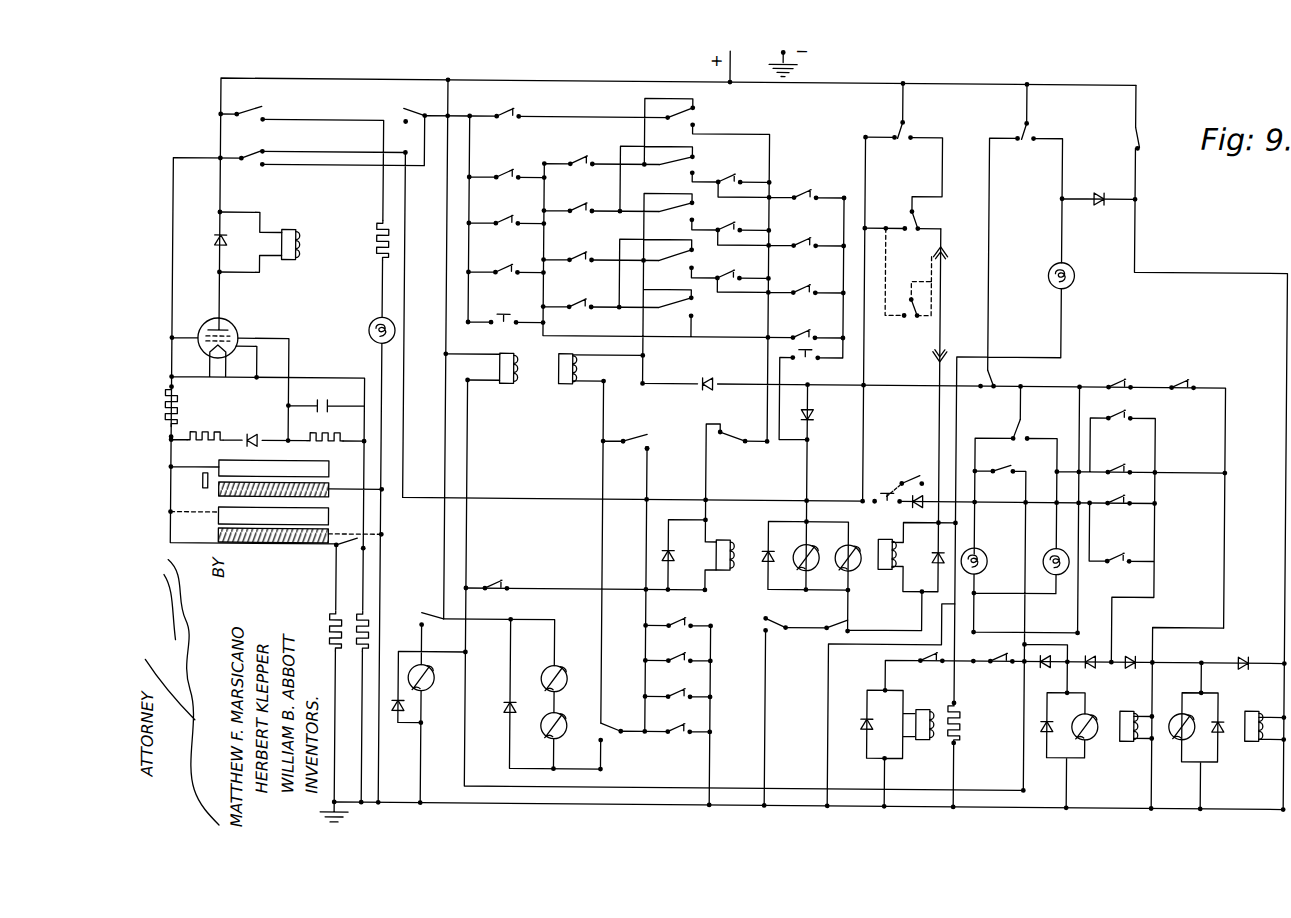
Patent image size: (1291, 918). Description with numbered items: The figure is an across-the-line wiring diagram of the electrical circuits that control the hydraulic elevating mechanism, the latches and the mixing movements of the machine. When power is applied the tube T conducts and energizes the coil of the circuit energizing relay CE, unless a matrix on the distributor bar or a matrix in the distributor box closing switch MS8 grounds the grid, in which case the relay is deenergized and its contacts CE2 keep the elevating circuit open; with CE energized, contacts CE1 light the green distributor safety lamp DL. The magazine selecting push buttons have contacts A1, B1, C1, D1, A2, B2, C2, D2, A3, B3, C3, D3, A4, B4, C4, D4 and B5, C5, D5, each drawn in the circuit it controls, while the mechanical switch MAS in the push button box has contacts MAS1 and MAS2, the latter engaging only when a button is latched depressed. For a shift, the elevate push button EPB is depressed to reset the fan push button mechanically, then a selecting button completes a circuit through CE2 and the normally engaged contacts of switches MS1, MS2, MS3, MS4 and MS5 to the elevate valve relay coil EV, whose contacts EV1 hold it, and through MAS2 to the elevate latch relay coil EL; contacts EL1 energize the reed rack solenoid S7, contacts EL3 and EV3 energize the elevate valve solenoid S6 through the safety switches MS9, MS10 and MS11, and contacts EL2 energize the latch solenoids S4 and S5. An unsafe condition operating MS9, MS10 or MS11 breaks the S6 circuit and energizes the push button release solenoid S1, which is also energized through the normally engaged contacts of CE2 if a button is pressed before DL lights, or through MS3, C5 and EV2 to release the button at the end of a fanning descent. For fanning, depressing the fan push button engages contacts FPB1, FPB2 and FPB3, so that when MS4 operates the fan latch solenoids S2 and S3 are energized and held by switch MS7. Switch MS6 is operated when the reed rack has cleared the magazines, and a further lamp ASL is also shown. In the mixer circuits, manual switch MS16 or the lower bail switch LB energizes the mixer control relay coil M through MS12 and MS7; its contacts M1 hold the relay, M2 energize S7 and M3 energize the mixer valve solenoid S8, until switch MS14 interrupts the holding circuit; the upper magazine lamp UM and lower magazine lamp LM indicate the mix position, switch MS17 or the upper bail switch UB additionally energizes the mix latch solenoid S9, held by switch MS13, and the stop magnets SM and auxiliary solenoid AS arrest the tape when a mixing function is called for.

The circuit energizing relay contacts CE1 is at (248, 110).
The circuit energizing relay contacts CE2 is at (251, 155).
The master switch contact 1 MAS1 is at (410, 104).
The circuit energizing relay CE is at (288, 226).
The tube T is at (232, 326).
The distributor safety lamp DL is at (371, 331).
The distributor box switch MS8 is at (350, 548).
The magazine selecting push button contacts A1 is at (499, 103).
The magazine selecting push button contacts B1 is at (500, 164).
The magazine selecting push button contacts C1 is at (500, 210).
The magazine selecting push button contacts D1 is at (499, 259).
The fan push button contacts FPB1 is at (495, 308).
The magazine selecting push button contacts A2 is at (574, 150).
The magazine selecting push button contacts B2 is at (575, 198).
The magazine selecting push button contacts C2 is at (575, 247).
The magazine selecting push button contacts D2 is at (574, 295).
The magazine position switch MS1 is at (690, 114).
The magazine position switch MS2 is at (694, 162).
The magazine position switch MS3 is at (669, 220).
The magazine position switch MS4 is at (668, 267).
The upper travel switch MS5 is at (673, 314).
The magazine selecting push button contacts B5 is at (729, 169).
The magazine selecting push button contacts C5 is at (728, 217).
The magazine selecting push button contacts D5 is at (729, 265).
The magazine selecting push button contacts A4 is at (812, 186).
The magazine selecting push button contacts B4 is at (811, 233).
The magazine selecting push button contacts C4 is at (811, 281).
The magazine selecting push button contacts D4 is at (812, 327).
The fan push button contacts FPB3 is at (808, 365).
The assembler entrance safety switch MS9 is at (894, 145).
The channel entrance safety switch MS10 is at (919, 216).
The second channel entrance safety switch MS11 is at (900, 321).
The protruding matrix switch MS12 is at (1021, 146).
The reed rack switch MS6 is at (1134, 133).
The lamp ASL is at (1076, 269).
The elevate latch relay EL is at (504, 384).
The elevate valve relay EV is at (561, 385).
The elevate valve relay contacts EV1 is at (636, 427).
The elevate valve relay contacts EV2 is at (744, 423).
The elevate push button EPB is at (915, 474).
The fan push button contacts FPB2 is at (888, 510).
The fan latch holding switch MS7 is at (977, 393).
The mix latch switch MS13 is at (1004, 445).
The mix position switch MS14 is at (1123, 373).
The mixer control relay contacts M1 is at (1184, 373).
The lower bail switch LB is at (1124, 408).
The manual mixing switch MS16 is at (1117, 462).
The manual mixing switch MS17 is at (1110, 494).
The upper bail switch UB is at (1118, 547).
The upper magazine lamp UM is at (1053, 544).
The lower magazine lamp LM is at (984, 566).
The mechanical switch contacts MAS2 is at (498, 577).
The elevate latch relay contacts EL1 is at (436, 610).
The reed rack solenoid S7 is at (428, 684).
The elevator latch solenoid S4 is at (571, 681).
The elevator latch solenoid S5 is at (565, 727).
The elevate latch relay contacts EL2 is at (616, 720).
The magazine selecting push button contacts A3 is at (684, 613).
The magazine selecting push button contacts B3 is at (681, 648).
The magazine selecting push button contacts C3 is at (681, 684).
The magazine selecting push button contacts D3 is at (681, 719).
The push button release solenoid S1 is at (719, 554).
The fan latch solenoid S2 is at (802, 544).
The fan latch solenoid S3 is at (844, 544).
The elevate latch relay contacts EL3 is at (780, 619).
The elevate valve relay contacts EV3 is at (840, 611).
The elevate valve solenoid S6 is at (886, 566).
The mixer control relay contacts M3 is at (924, 670).
The mixer control relay contacts M2 is at (992, 672).
The mixer valve solenoid S8 is at (920, 720).
The mix latch solenoid S9 is at (1080, 714).
The mixer control relay M is at (1132, 736).
The auxiliary solenoid AS is at (1180, 710).
The stop magnets SM is at (1256, 742).